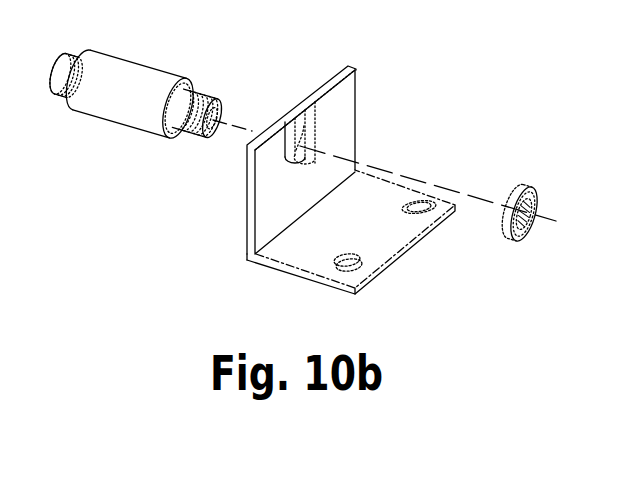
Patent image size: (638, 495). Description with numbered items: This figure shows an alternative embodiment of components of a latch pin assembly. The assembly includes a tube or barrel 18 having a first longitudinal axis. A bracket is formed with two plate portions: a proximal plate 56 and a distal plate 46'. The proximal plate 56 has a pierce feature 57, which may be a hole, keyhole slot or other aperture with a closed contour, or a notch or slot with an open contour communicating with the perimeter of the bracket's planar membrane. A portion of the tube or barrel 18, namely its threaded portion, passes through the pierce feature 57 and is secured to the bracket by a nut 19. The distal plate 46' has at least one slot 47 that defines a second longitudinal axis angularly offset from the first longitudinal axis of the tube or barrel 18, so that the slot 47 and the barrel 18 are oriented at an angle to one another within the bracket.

The tube or barrel 18 is at (150, 67).
The nut 19 is at (512, 190).
The plate 46' is at (332, 244).
The slot 47 is at (421, 213).
The proximal plate 56 is at (245, 188).
The pierce feature 57 is at (303, 148).